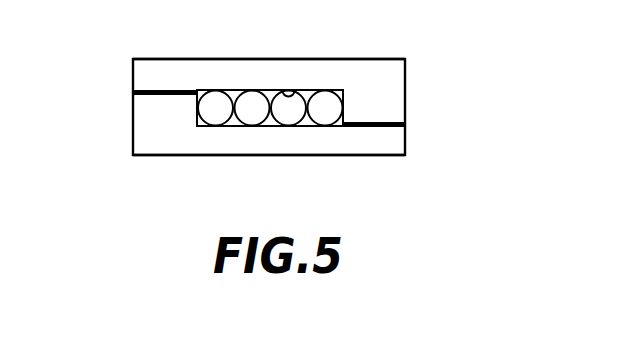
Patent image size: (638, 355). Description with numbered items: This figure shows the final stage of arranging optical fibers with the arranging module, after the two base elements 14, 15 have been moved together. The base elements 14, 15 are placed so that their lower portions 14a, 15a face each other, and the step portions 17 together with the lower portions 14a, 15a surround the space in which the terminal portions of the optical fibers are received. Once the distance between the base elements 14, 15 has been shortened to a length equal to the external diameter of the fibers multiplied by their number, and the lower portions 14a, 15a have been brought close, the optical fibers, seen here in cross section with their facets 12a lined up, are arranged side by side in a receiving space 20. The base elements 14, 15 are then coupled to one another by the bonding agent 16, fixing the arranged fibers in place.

The facets 12a is at (215, 100).
The base element 14 is at (343, 58).
The lower portion 14a is at (270, 92).
The base element 15 is at (382, 149).
The lower portion 15a is at (266, 127).
The bonding agent 16 is at (405, 125).
The step portions 17 is at (147, 122).
The receiving space 20 is at (312, 90).